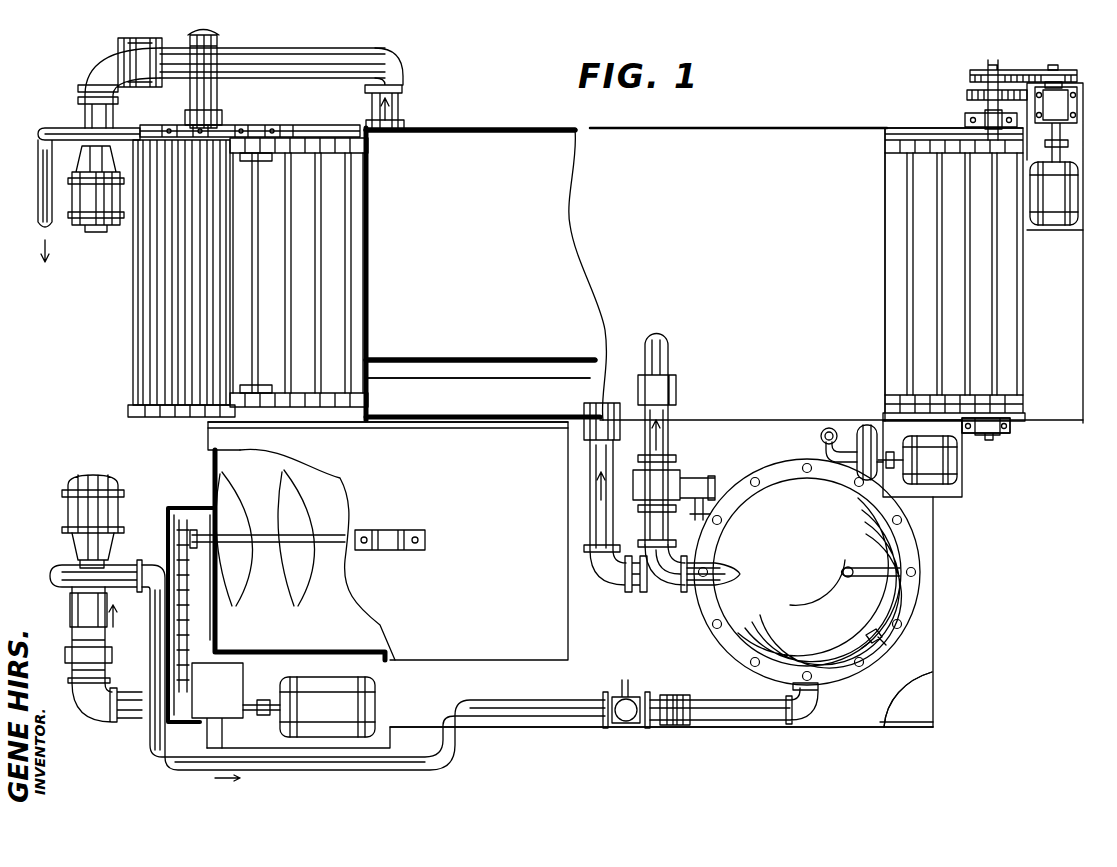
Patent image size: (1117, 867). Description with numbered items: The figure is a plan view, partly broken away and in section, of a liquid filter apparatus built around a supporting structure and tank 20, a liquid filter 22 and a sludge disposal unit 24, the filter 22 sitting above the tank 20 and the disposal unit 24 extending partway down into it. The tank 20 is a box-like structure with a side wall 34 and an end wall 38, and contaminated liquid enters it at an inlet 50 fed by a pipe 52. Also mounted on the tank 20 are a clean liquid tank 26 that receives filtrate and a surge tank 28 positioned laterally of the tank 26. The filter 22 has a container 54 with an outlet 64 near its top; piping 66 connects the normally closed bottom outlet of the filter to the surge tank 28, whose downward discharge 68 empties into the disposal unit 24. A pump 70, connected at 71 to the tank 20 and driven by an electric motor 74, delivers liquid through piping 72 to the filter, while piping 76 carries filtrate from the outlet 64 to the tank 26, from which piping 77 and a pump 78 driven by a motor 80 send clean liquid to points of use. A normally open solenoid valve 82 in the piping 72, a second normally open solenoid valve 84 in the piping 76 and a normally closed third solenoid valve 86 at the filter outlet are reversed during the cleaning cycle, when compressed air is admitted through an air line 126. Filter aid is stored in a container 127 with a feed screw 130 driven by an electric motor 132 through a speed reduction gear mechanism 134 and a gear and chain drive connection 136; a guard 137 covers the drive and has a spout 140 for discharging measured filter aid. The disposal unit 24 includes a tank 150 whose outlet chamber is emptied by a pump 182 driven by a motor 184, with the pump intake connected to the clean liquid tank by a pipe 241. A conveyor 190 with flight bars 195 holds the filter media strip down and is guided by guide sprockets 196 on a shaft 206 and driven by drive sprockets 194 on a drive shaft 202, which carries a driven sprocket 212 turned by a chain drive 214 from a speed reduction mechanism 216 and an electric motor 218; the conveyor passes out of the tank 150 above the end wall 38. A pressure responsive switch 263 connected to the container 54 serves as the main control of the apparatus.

The supporting structure and tank 20 is at (818, 730).
The liquid filter 22 is at (912, 552).
The sludge disposal unit 24 is at (904, 128).
The clean liquid tank 26 is at (475, 133).
The surge tank 28 is at (498, 362).
The side wall 34 is at (915, 730).
The end wall 38 is at (938, 690).
The inlet 50 is at (225, 120).
The pipe 52 is at (215, 88).
The container 54 is at (819, 583).
The outlet 64 is at (722, 568).
The piping 66 is at (600, 582).
The discharge 68 is at (412, 365).
The pump 70 is at (70, 570).
The pump connection 71 is at (128, 722).
The piping 72 is at (458, 758).
The electric motor 74 is at (80, 500).
The piping 76 is at (675, 348).
The piping 77 is at (340, 65).
The pump 78 is at (65, 132).
The electric motor 80 is at (92, 232).
The solenoid valve 82 is at (626, 730).
The second solenoid valve 84 is at (695, 500).
The third solenoid valve 86 is at (665, 588).
The air line 126 is at (905, 585).
The filter aid container 127 is at (500, 660).
The feed screw 130 is at (318, 500).
The electric motor 132 is at (375, 692).
The speed reduction gear mechanism 134 is at (245, 672).
The gear and chain drive connection 136 is at (196, 490).
The guard 137 is at (168, 724).
The spout 140 is at (205, 560).
The tank 150 is at (540, 128).
The pump 182 is at (862, 425).
The electric motor 184 is at (958, 478).
The conveyor 190 is at (348, 420).
The drive sprockets 194 is at (960, 130).
The flight bars 195 is at (360, 255).
The guide sprockets 196 is at (262, 161).
The drive shaft 202 is at (1000, 436).
The shaft 206 is at (268, 275).
The driven sprocket 212 is at (985, 70).
The chain drive 214 is at (1048, 70).
The speed reduction mechanism 216 is at (1060, 108).
The electric motor 218 is at (1055, 226).
The pipe 241 is at (820, 436).
The pressure responsive switch 263 is at (866, 650).